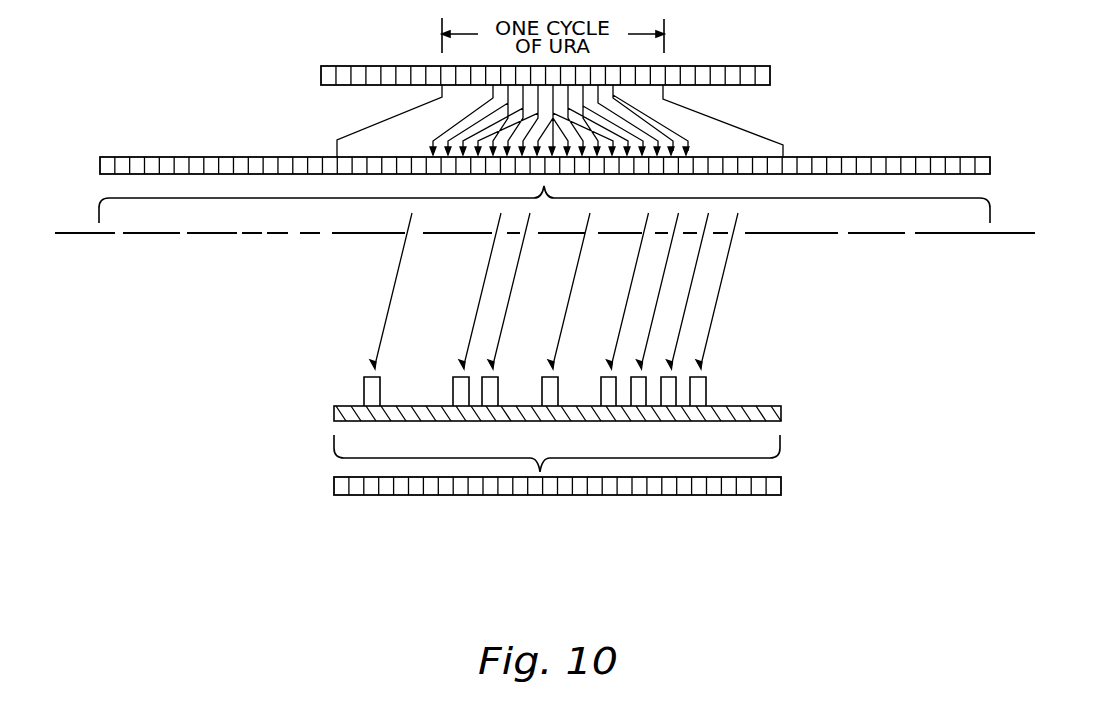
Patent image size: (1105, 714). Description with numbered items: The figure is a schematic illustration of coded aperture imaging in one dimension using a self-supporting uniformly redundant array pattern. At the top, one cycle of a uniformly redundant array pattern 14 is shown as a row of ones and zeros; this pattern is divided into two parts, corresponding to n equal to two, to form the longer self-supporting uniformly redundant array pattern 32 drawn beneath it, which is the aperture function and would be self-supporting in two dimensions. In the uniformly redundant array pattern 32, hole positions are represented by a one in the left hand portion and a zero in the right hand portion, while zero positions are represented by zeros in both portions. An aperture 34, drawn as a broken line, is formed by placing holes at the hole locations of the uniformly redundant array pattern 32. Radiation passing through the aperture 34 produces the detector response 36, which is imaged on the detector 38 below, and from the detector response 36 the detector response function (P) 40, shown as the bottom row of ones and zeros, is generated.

The uniformly redundant array pattern 14 is at (772, 77).
The self-supporting uniformly redundant array pattern 32 is at (907, 156).
The aperture 34 is at (878, 238).
The detector response 36 is at (712, 392).
The detector 38 is at (782, 420).
The detector response function (P) 40 is at (782, 492).